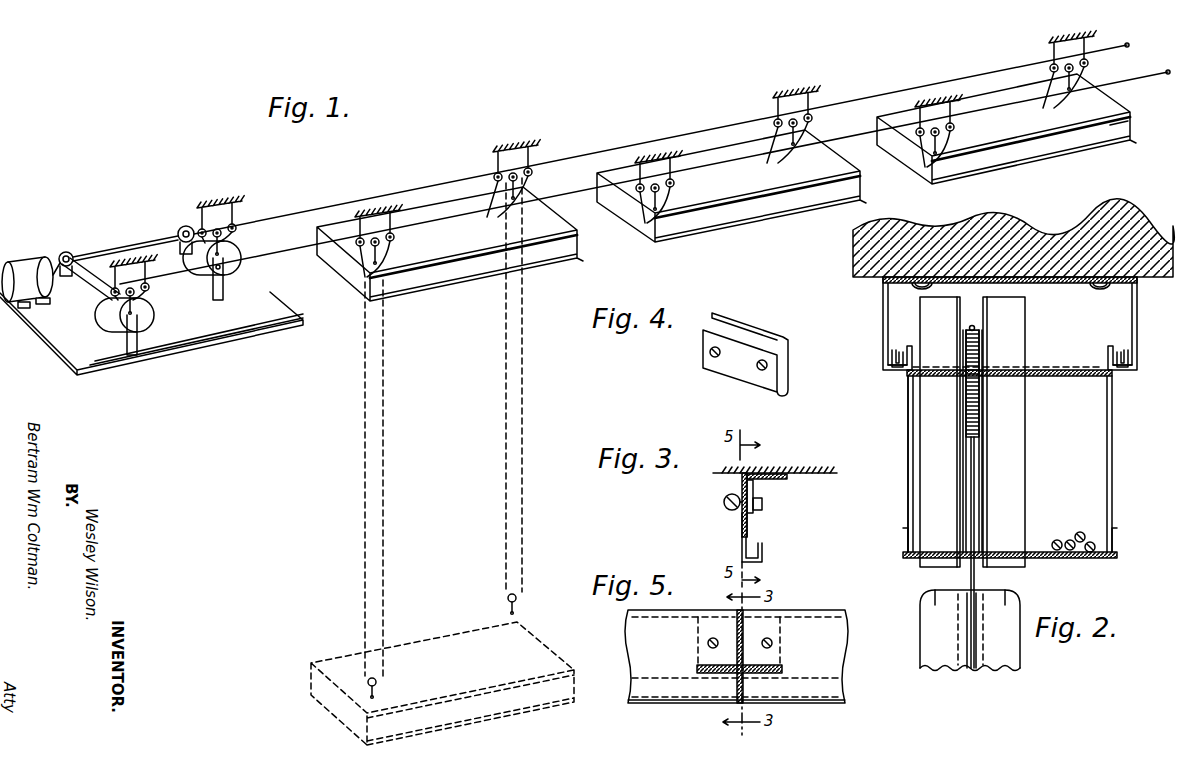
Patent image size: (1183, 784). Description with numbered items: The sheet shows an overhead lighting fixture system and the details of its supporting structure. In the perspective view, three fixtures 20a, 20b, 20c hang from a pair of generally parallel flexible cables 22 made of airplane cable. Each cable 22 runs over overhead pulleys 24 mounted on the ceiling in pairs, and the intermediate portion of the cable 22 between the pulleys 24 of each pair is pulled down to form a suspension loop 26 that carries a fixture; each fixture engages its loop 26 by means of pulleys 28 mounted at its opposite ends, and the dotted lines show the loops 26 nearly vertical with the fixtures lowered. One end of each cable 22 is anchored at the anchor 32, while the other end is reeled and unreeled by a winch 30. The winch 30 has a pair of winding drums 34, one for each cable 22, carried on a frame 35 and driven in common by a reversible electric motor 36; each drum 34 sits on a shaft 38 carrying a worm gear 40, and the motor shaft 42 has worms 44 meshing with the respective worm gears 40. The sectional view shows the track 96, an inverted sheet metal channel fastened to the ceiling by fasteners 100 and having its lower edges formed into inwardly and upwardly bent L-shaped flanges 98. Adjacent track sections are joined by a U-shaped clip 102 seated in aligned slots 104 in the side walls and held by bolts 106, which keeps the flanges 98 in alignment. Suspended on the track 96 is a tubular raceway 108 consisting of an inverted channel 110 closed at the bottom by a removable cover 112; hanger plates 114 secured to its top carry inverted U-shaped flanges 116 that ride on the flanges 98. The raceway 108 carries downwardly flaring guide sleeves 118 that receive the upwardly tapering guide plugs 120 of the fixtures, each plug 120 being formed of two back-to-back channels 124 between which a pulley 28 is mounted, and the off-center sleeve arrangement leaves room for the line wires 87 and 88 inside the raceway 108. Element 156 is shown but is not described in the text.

In FIG. 1, the fixture 20a is at (446, 295).
In FIG. 1, the fixture 20b is at (739, 218).
In FIG. 1, the fixture 20c is at (1016, 166).
In FIG. 1, the cable 22 is at (576, 192).
In FIG. 2, the cable 22 is at (975, 329).
In FIG. 1, the pulley 24 is at (363, 280).
In FIG. 2, the pulley 24 is at (980, 430).
In FIG. 1, the suspension loop 26 is at (520, 440).
In FIG. 1, the pulley 28 is at (393, 232).
In FIG. 2, the pulley 28 is at (971, 668).
In FIG. 1, the winch 30 is at (32, 349).
In FIG. 1, the anchor 32 is at (1130, 46).
In FIG. 1, the winding drum 34 is at (155, 318).
In FIG. 1, the frame 35 is at (100, 357).
In FIG. 1, the electric motor 36 is at (30, 258).
In FIG. 1, the shaft 38 is at (92, 295).
In FIG. 1, the worm gear 40 is at (70, 252).
In FIG. 1, the motor shaft 42 is at (122, 253).
In FIG. 1, the worm 44 is at (66, 276).
In FIG. 2, the line wire 87 is at (1074, 538).
In FIG. 2, the line wire 88 is at (1088, 541).
In FIG. 2, the track 96 is at (883, 323).
In FIG. 5, the track 96 is at (731, 625).
In FIG. 2, the L-shaped flange 98 is at (893, 370).
In FIG. 3, the L-shaped flange 98 is at (760, 563).
In FIG. 2, the fastener 100 is at (910, 287).
In FIG. 3, the clip 102 is at (753, 488).
In FIG. 4, the clip 102 is at (760, 331).
In FIG. 3, the slot 104 is at (740, 530).
In FIG. 5, the slot 104 is at (724, 712).
In FIG. 3, the bolt 106 is at (762, 507).
In FIG. 5, the bolt 106 is at (708, 642).
In FIG. 2, the raceway 108 is at (1115, 464).
In FIG. 2, the channel 110 is at (908, 445).
In FIG. 2, the cover 112 is at (1045, 561).
In FIG. 2, the hanger plate 114 is at (1040, 370).
In FIG. 2, the inverted U-shaped flange 116 is at (895, 345).
In FIG. 2, the guide sleeve 118 is at (912, 488).
In FIG. 2, the guide plug 120 is at (920, 632).
In FIG. 2, the channel 124 is at (993, 592).
In FIG. 1, the side panel 156 is at (1118, 128).